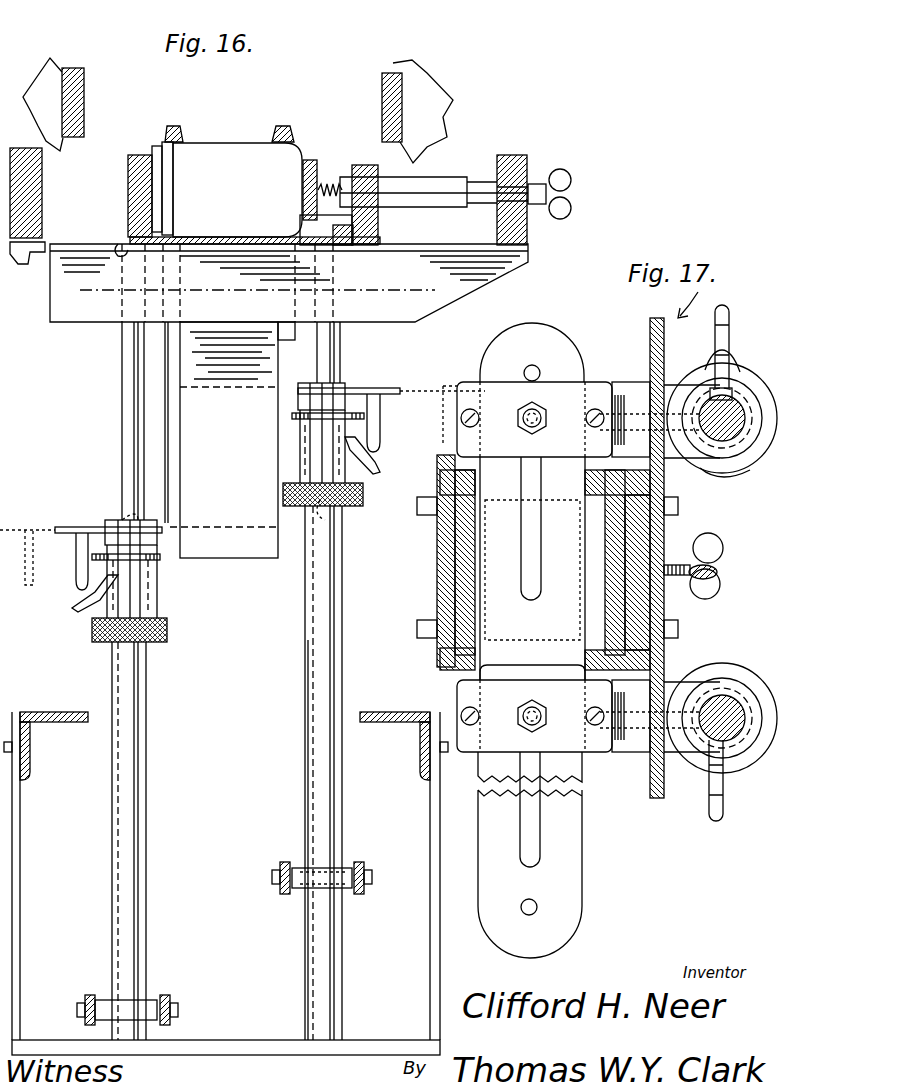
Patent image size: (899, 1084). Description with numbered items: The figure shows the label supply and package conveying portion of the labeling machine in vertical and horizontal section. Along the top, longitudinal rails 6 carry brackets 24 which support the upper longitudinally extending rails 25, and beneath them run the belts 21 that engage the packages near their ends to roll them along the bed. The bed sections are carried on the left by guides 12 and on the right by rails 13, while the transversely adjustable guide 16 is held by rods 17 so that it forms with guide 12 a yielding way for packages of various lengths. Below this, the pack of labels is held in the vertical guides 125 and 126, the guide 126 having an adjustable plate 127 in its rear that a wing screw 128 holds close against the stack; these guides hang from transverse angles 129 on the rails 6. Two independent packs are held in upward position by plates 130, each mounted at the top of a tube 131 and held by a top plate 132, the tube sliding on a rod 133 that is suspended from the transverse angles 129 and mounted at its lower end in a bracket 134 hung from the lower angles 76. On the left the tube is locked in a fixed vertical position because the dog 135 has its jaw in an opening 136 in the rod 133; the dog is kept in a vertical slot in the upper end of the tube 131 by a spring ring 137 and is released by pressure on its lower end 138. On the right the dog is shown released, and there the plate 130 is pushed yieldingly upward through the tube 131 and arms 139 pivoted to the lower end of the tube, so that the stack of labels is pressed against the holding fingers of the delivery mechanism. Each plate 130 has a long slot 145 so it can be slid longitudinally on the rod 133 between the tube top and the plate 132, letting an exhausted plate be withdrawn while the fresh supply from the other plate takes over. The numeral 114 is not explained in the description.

In FIG. 16, the longitudinal rails 6 is at (42, 182).
In FIG. 16, the guides 12 is at (128, 184).
In FIG. 16, the rails 13 is at (378, 153).
In FIG. 16, the guide 16 is at (312, 160).
In FIG. 16, the rods 17 is at (104, 280).
In FIG. 16, the belts 21 is at (285, 126).
In FIG. 16, the brackets 24 is at (50, 82).
In FIG. 16, the upper longitudinally extending rails 25 is at (84, 98).
In FIG. 16, the lower angles 76 is at (70, 722).
In FIG. 16, the pivot 114 is at (124, 252).
In FIG. 17, the vertical guide 125 is at (455, 580).
In FIG. 17, the vertical guide 126 is at (625, 552).
In FIG. 17, the adjustable plate 127 is at (560, 586).
In FIG. 17, the wing screw 128 is at (722, 596).
In FIG. 16, the transverse angles 129 is at (475, 292).
In FIG. 17, the transverse angles 129 is at (650, 342).
In FIG. 16, the plates 130 is at (82, 540).
In FIG. 17, the plates 130 is at (503, 590).
In FIG. 16, the tube 131 is at (147, 692).
In FIG. 16, the top plate 132 is at (140, 521).
In FIG. 17, the top plate 132 is at (572, 398).
In FIG. 16, the rod 133 is at (122, 438).
In FIG. 17, the rod 133 is at (548, 724).
In FIG. 16, the brackets 134 is at (255, 1040).
In FIG. 16, the dog 135 is at (100, 527).
In FIG. 17, the dog 135 is at (723, 806).
In FIG. 16, the opening 136 is at (128, 520).
In FIG. 16, the spring ring 137 is at (160, 560).
In FIG. 17, the spring ring 137 is at (752, 692).
In FIG. 16, the lower end of dog 138 is at (76, 610).
In FIG. 16, the arms 139 is at (290, 862).
In FIG. 17, the long slot 145 is at (548, 544).